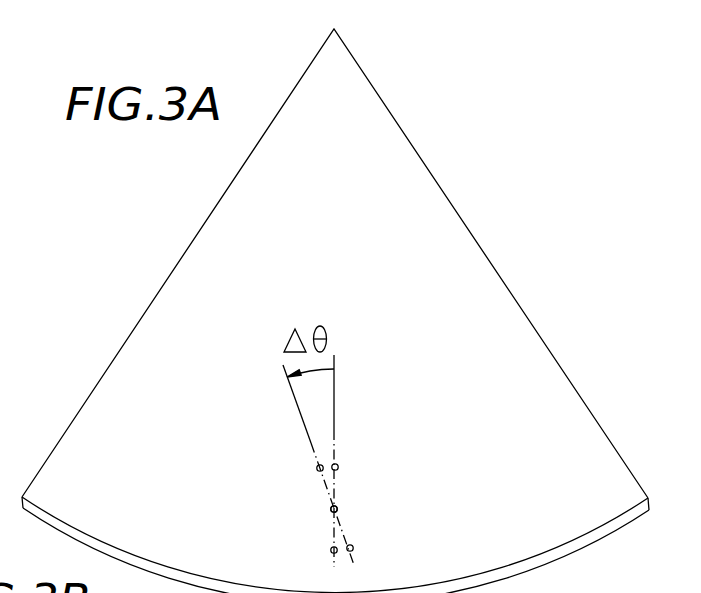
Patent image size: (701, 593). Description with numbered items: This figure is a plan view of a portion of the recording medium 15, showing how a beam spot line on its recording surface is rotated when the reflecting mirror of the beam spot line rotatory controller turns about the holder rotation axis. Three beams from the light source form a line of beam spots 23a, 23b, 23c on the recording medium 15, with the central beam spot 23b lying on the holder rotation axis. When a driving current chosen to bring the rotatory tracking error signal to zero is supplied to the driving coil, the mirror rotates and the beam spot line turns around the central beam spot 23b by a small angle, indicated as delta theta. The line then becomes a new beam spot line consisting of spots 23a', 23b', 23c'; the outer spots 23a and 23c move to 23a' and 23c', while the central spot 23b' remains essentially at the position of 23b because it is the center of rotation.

The recording medium 15 is at (600, 498).
The beam spot 23a is at (306, 549).
The rotated beam spot 23a' is at (382, 549).
The central beam spot 23b is at (365, 511).
The rotated central beam spot 23b' is at (305, 511).
The beam spot 23c is at (359, 471).
The rotated beam spot 23c' is at (291, 471).